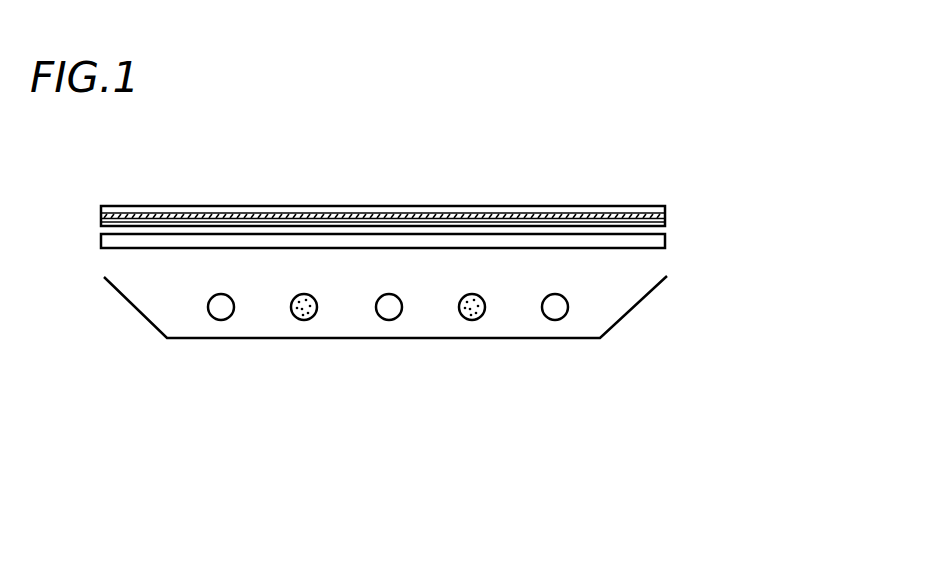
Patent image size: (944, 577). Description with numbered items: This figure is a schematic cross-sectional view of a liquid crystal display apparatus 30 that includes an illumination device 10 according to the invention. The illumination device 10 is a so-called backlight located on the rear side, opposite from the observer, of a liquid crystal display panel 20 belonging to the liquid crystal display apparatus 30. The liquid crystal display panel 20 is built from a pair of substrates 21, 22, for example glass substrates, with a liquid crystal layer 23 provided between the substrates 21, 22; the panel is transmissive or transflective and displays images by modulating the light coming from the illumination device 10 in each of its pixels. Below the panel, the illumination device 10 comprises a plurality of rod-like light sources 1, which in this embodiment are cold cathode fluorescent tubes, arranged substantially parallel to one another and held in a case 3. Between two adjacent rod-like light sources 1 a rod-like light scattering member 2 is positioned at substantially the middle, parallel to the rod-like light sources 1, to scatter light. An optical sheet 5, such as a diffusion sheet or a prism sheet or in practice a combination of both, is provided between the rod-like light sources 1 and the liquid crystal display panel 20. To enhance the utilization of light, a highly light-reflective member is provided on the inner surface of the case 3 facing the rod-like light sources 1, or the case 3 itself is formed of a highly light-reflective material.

The rod-like light source 1 is at (221, 320).
The light scattering member 2 is at (304, 320).
The case 3 is at (635, 307).
The optical sheet 5 is at (665, 243).
The illumination device 10 is at (471, 336).
The liquid crystal display panel 20 is at (467, 212).
The substrate 21 is at (665, 225).
The substrate 22 is at (665, 209).
The liquid crystal layer 23 is at (665, 216).
The liquid crystal display apparatus 30 is at (589, 173).